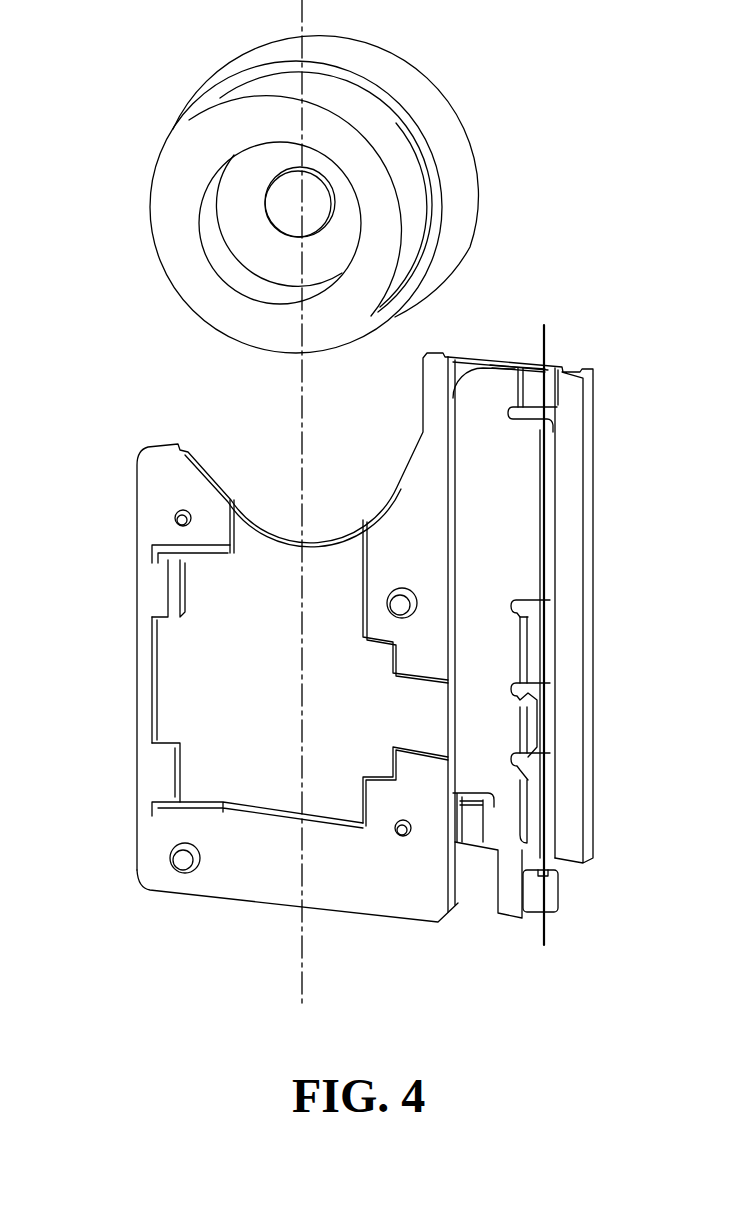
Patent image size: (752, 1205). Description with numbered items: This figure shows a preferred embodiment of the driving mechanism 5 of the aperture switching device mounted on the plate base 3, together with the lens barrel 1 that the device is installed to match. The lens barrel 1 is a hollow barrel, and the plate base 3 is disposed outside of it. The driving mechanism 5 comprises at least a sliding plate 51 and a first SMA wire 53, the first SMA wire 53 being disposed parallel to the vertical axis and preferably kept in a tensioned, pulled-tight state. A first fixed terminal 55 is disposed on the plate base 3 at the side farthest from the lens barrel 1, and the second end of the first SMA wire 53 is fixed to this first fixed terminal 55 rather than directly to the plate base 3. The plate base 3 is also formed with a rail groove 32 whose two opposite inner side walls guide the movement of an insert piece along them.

The lens barrel 1 is at (162, 215).
The plate base 3 is at (370, 637).
The rail groove 32 is at (185, 693).
The driving mechanism 5 is at (549, 595).
The sliding plate 51 is at (485, 780).
The first SMA wire 53 is at (547, 633).
The first fixed terminal 55 is at (553, 897).